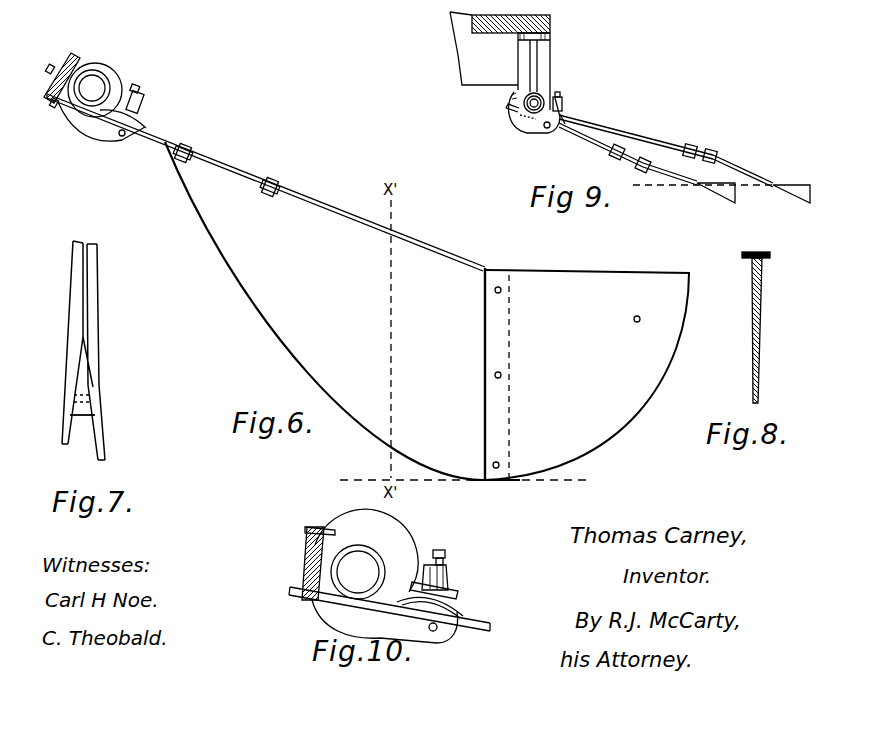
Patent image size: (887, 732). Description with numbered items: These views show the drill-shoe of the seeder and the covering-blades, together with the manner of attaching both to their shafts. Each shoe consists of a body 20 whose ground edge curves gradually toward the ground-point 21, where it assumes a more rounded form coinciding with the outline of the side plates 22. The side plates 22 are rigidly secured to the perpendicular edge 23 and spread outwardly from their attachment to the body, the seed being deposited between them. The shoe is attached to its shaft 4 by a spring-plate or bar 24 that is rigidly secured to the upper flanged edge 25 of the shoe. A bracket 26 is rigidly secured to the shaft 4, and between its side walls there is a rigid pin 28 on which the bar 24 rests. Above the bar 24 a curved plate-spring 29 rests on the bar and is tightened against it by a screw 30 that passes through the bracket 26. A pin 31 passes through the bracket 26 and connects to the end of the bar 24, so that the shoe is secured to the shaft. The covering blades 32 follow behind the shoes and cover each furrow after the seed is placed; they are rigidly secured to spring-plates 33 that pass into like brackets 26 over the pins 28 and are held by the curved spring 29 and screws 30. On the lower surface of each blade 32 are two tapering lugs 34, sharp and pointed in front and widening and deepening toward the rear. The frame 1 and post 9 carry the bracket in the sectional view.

In FIG. 9, the machine frame 1 is at (518, 15).
In FIG. 10, the shaft 4 is at (380, 555).
In FIG. 9, the bracket post 9 is at (546, 50).
In FIG. 6, the body 20 is at (325, 311).
In FIG. 8, the body 20 is at (752, 335).
In FIG. 6, the ground-point 21 is at (492, 483).
In FIG. 7, the ground-point 21 is at (110, 352).
In FIG. 6, the side plates 22 is at (587, 375).
In FIG. 7, the side plates 22 is at (62, 432).
In FIG. 6, the perpendicular edge 23 is at (485, 348).
In FIG. 7, the perpendicular edge 23 is at (90, 410).
In FIG. 6, the spring-plate 24 is at (213, 157).
In FIG. 10, the spring-plate 24 is at (490, 620).
In FIG. 6, the upper flanged edge 25 is at (252, 180).
In FIG. 8, the upper flanged edge 25 is at (780, 266).
In FIG. 6, the bracket 26 is at (122, 75).
In FIG. 9, the bracket 26 is at (527, 126).
In FIG. 10, the bracket 26 is at (385, 576).
In FIG. 6, the pin 28 is at (122, 137).
In FIG. 9, the pin 28 is at (546, 128).
In FIG. 10, the pin 28 is at (437, 630).
In FIG. 6, the curved plate-spring 29 is at (146, 121).
In FIG. 9, the curved plate-spring 29 is at (568, 118).
In FIG. 10, the curved plate-spring 29 is at (465, 610).
In FIG. 6, the screw 30 is at (145, 88).
In FIG. 9, the screw 30 is at (575, 81).
In FIG. 10, the screw 30 is at (446, 556).
In FIG. 6, the pin 31 is at (73, 57).
In FIG. 10, the pin 31 is at (316, 526).
In FIG. 9, the covering blades 32 is at (670, 178).
In FIG. 9, the spring-plates 33 is at (606, 148).
In FIG. 9, the tapering lugs 34 is at (788, 205).